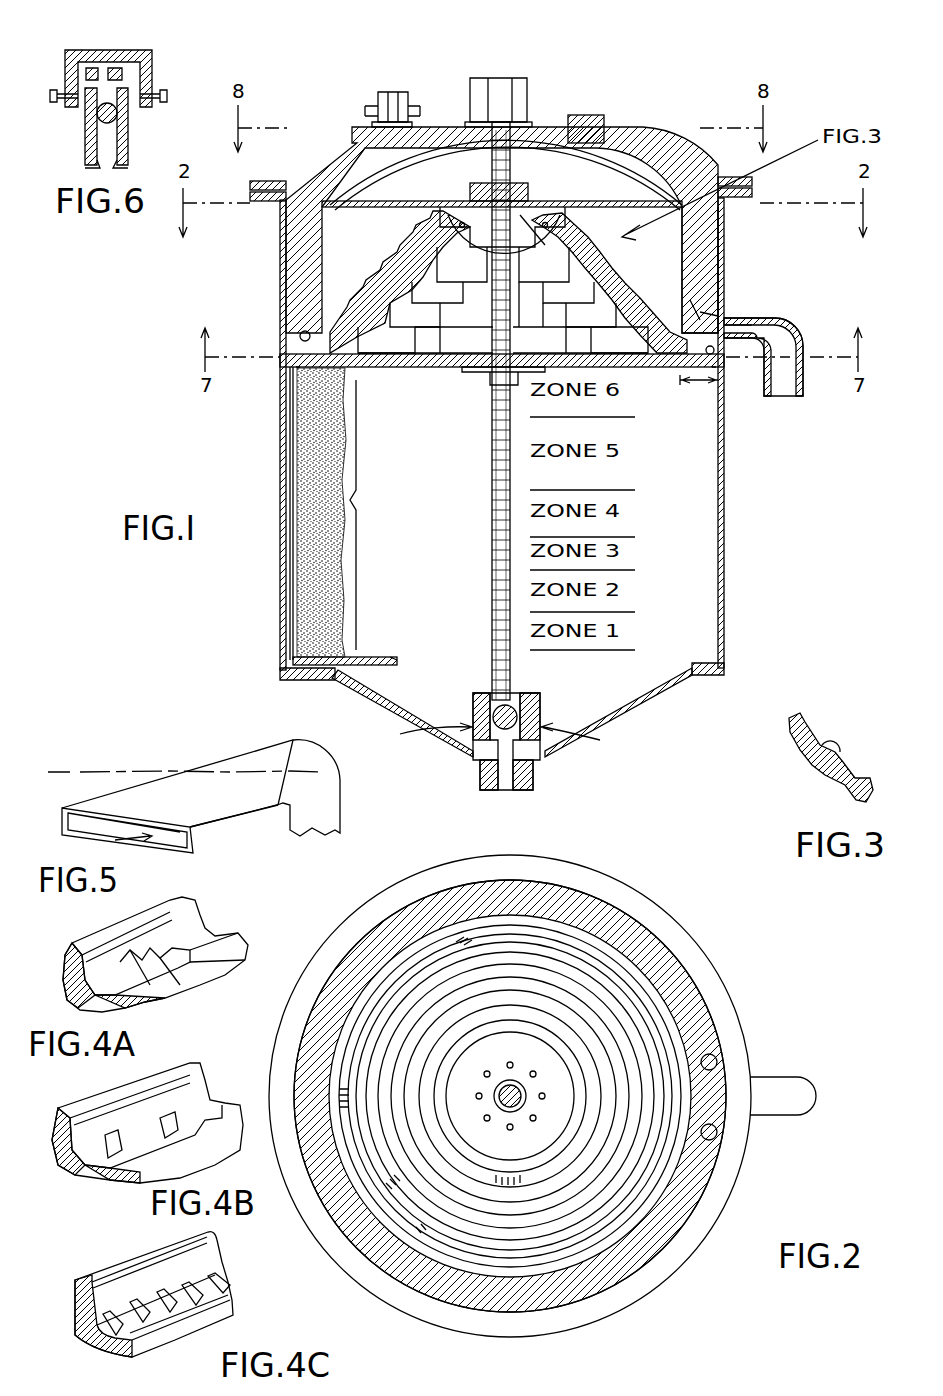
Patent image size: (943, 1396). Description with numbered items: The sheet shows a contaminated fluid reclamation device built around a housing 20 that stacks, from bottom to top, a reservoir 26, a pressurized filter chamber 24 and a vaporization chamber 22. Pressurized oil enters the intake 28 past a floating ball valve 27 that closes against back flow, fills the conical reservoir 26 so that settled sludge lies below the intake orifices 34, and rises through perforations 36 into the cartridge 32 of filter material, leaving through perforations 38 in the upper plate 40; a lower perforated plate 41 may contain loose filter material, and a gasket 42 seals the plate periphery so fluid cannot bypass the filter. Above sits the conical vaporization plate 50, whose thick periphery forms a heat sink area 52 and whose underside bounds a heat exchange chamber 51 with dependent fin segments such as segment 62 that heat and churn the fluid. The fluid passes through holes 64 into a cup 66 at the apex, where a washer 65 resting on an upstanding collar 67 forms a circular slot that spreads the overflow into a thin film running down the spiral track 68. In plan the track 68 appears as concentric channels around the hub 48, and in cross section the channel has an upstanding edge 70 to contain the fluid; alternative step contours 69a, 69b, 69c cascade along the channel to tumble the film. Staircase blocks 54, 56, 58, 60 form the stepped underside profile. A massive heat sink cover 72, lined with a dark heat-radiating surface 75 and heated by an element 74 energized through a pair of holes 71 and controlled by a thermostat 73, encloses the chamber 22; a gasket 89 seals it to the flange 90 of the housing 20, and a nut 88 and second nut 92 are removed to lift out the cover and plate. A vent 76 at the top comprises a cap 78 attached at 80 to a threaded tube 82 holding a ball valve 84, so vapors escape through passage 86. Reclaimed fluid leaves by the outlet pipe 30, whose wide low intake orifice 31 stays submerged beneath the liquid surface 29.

In FIG. 1, the housing 20 is at (742, 575).
In FIG. 2, the housing 20 is at (690, 1300).
In FIG. 1, the vaporization chamber 22 is at (358, 236).
In FIG. 1, the pressurized filter chamber 24 is at (430, 554).
In FIG. 1, the reservoir 26 is at (459, 696).
In FIG. 1, the one-way valve 27 is at (530, 712).
In FIG. 1, the intake 28 is at (516, 797).
In FIG. 1, the surface of the liquid fluid 29 is at (700, 300).
In FIG. 5, the surface of the liquid fluid 29 is at (258, 730).
In FIG. 1, the outlet pipe 30 is at (796, 406).
In FIG. 5, the outlet pipe 30 is at (338, 805).
In FIG. 2, the outlet pipe 30 is at (815, 1085).
In FIG. 1, the intake orifice 31 is at (735, 330).
In FIG. 5, the intake orifice 31 is at (135, 845).
In FIG. 1, the cartridge 32 is at (297, 628).
In FIG. 1, the intake orifices 34 is at (515, 738).
In FIG. 1, the perforations in the bottom of the cartridge 36 is at (380, 668).
In FIG. 1, the perforations in the top of the cartridge 38 is at (372, 370).
In FIG. 1, the upper perforated plate 40 is at (412, 370).
In FIG. 1, the lower perforated plate 41 is at (394, 660).
In FIG. 1, the sealing gasket 42 is at (288, 362).
In FIG. 2, the central hub 48 is at (517, 1083).
In FIG. 1, the vaporization plate 50 is at (690, 285).
In FIG. 1, the heat exchange chamber 51 is at (552, 304).
In FIG. 1, the heat sink area 52 is at (698, 382).
In FIG. 1, the step block 54 is at (503, 264).
In FIG. 1, the step block 56 is at (503, 293).
In FIG. 1, the step block 58 is at (503, 315).
In FIG. 1, the step block 60 is at (503, 340).
In FIG. 1, the heat exchange flange segment 62 is at (485, 343).
In FIG. 1, the holes 64 is at (455, 223).
In FIG. 2, the holes 64 is at (540, 1083).
In FIG. 1, the washer 65 is at (570, 198).
In FIG. 1, the cup 66 is at (522, 222).
In FIG. 2, the cup 66 is at (522, 1154).
In FIG. 1, the upstanding collar 67 is at (470, 215).
In FIG. 1, the spiral track 68 is at (372, 292).
In FIG. 3, the spiral track 68 is at (828, 748).
In FIG. 2, the spiral track 68 is at (590, 1063).
In FIG. 4A, the cascaded steps 69a is at (194, 942).
In FIG. 4B, the cascaded steps 69b is at (197, 1107).
In FIG. 4C, the cascaded steps 69c is at (219, 1273).
In FIG. 3, the upstanding edge 70 is at (838, 750).
In FIG. 2, the holes 71 is at (718, 1062).
In FIG. 1, the heat sink walls or cover 72 is at (700, 240).
In FIG. 2, the heat sink walls or cover 72 is at (640, 935).
In FIG. 1, the thermostat 73 is at (586, 125).
In FIG. 1, the heating element 74 is at (300, 334).
In FIG. 1, the dark-colored surface 75 is at (630, 133).
In FIG. 1, the vent 76 is at (389, 84).
In FIG. 6, the vent 76 is at (103, 42).
In FIG. 6, the cap 78 is at (145, 65).
In FIG. 6, the attachment 80 is at (52, 90).
In FIG. 6, the threaded tube 82 is at (128, 135).
In FIG. 6, the ball valve 84 is at (98, 118).
In FIG. 6, the passage 86 is at (88, 72).
In FIG. 1, the nut 88 is at (518, 90).
In FIG. 1, the gasket 89 is at (262, 193).
In FIG. 1, the flange 90 is at (265, 203).
In FIG. 1, the second nut 92 is at (484, 183).